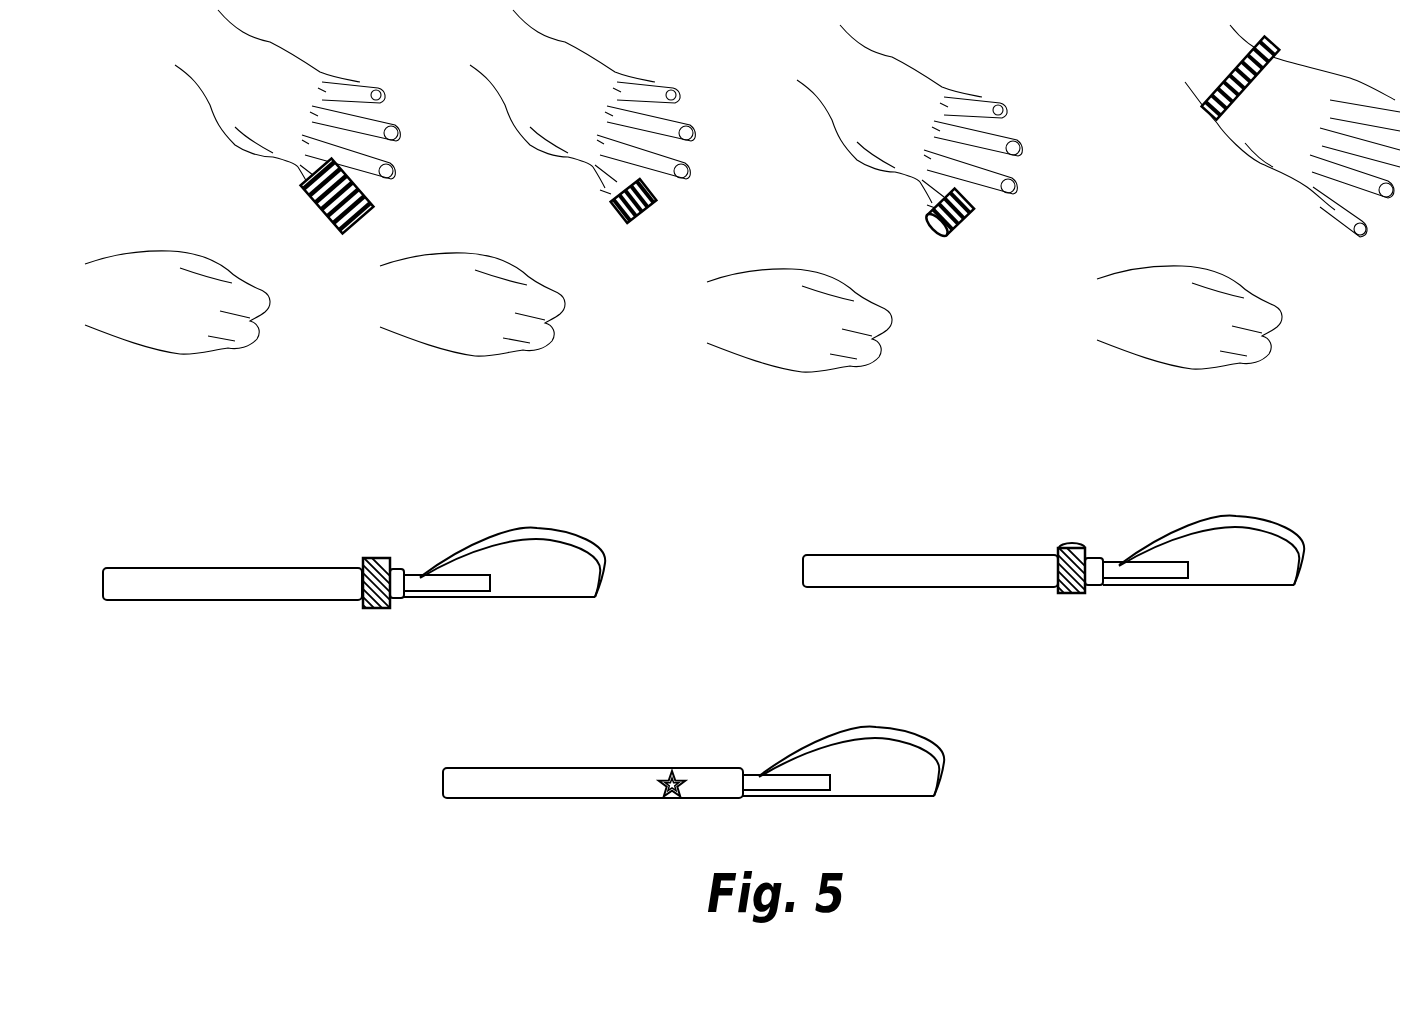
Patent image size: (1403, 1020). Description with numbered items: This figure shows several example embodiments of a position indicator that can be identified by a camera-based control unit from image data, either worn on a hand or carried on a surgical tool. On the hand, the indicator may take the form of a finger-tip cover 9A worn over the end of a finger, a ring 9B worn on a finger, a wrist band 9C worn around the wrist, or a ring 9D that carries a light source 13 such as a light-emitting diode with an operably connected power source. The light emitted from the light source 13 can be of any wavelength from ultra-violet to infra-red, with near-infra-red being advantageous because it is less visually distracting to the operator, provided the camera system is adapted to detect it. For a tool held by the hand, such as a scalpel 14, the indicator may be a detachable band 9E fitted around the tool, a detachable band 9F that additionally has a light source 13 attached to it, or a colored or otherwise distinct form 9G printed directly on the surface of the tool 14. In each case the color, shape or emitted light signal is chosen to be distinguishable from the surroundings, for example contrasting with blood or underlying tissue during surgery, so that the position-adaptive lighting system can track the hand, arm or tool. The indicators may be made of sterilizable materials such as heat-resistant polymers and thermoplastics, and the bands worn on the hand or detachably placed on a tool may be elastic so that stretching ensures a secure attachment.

The finger-tip cover 9A is at (327, 213).
The ring 9B is at (620, 218).
The wrist band 9C is at (953, 224).
The ring having a light source 9D is at (1206, 113).
The detachable band 9E is at (379, 557).
The detachable band having a light source 9F is at (1076, 571).
The colored or otherwise distinct form 9G is at (685, 771).
The light source 13 is at (935, 235).
The scalpel 14 is at (237, 570).